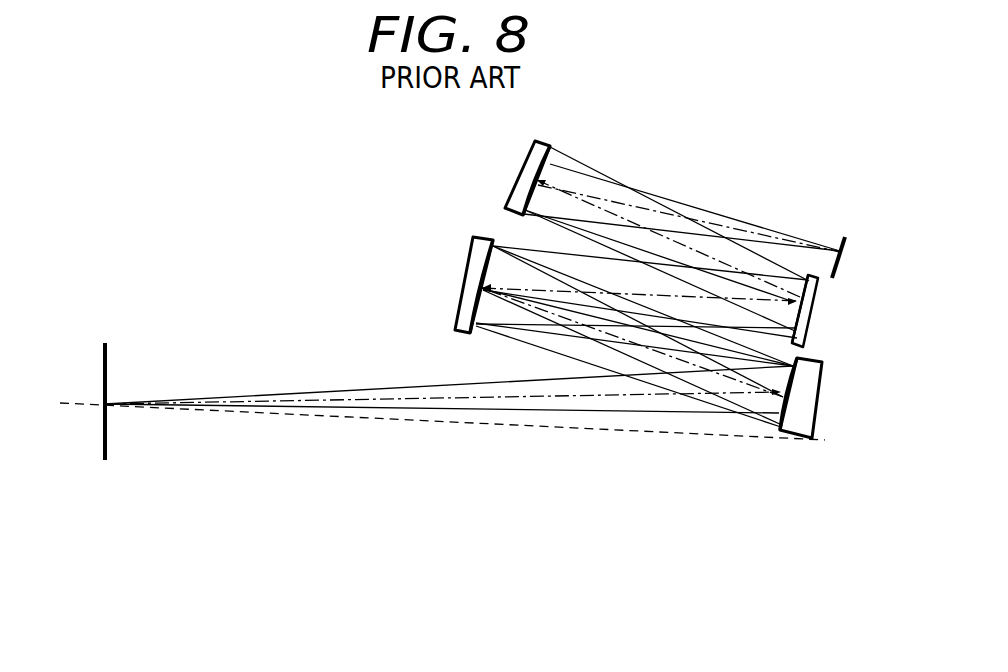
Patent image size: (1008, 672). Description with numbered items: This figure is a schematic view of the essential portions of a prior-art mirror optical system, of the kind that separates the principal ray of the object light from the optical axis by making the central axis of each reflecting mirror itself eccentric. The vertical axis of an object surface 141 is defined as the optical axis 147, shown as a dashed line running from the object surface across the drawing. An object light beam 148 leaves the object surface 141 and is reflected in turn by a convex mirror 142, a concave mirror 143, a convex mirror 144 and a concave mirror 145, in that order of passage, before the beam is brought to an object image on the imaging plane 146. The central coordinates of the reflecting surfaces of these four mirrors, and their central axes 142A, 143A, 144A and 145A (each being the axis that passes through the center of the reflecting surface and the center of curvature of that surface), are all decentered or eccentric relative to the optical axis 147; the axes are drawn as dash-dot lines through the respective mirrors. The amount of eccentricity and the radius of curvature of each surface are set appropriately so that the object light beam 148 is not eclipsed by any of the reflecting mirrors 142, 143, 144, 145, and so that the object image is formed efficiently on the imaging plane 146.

The object surface 141 is at (100, 357).
The convex mirror 142 is at (780, 426).
The central axis of convex mirror 142A is at (718, 380).
The concave mirror 143 is at (464, 306).
The central axis of concave mirror 143A is at (541, 300).
The convex mirror 144 is at (803, 266).
The central axis of convex mirror 144A is at (736, 285).
The concave mirror 145 is at (542, 172).
The central axis of concave mirror 145A is at (600, 200).
The imaging plane 146 is at (849, 251).
The optical axis 147 is at (653, 432).
The object light beam 148 is at (315, 392).